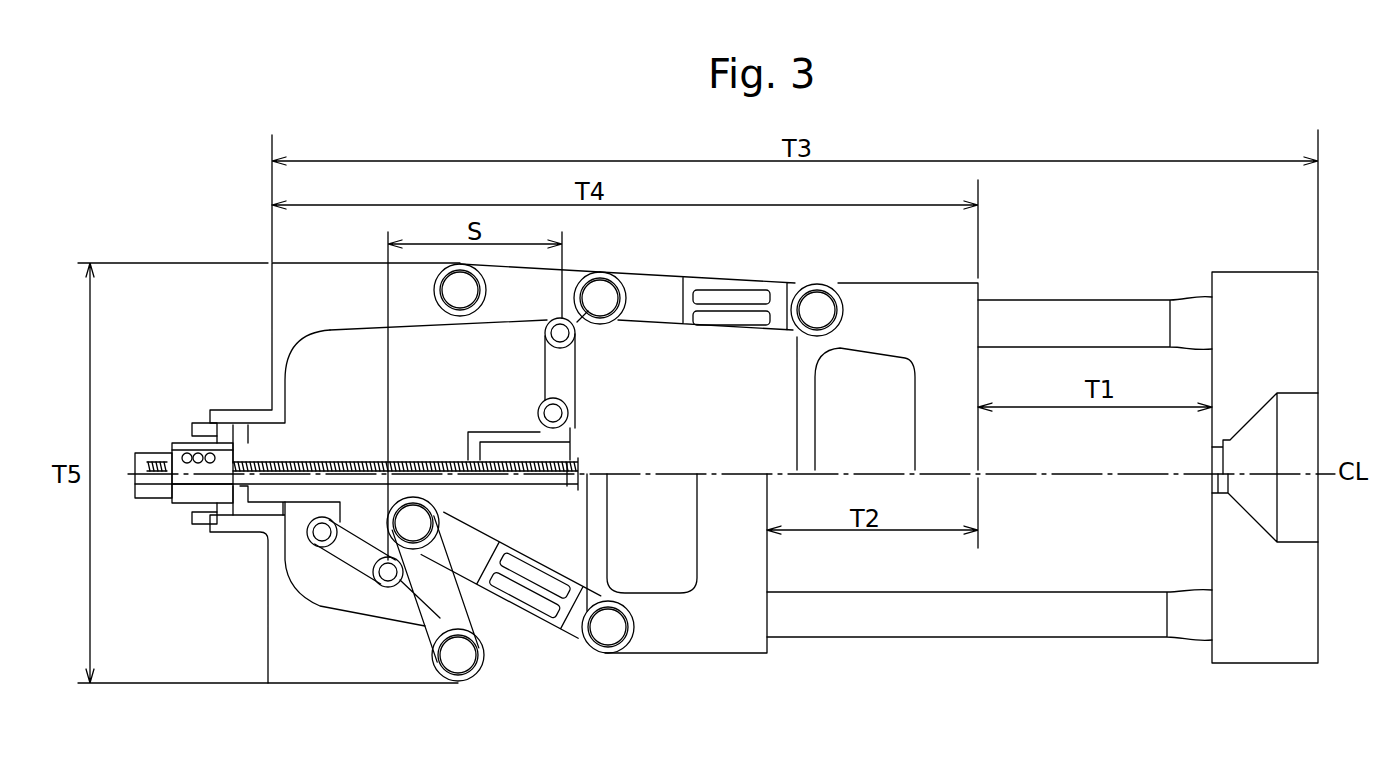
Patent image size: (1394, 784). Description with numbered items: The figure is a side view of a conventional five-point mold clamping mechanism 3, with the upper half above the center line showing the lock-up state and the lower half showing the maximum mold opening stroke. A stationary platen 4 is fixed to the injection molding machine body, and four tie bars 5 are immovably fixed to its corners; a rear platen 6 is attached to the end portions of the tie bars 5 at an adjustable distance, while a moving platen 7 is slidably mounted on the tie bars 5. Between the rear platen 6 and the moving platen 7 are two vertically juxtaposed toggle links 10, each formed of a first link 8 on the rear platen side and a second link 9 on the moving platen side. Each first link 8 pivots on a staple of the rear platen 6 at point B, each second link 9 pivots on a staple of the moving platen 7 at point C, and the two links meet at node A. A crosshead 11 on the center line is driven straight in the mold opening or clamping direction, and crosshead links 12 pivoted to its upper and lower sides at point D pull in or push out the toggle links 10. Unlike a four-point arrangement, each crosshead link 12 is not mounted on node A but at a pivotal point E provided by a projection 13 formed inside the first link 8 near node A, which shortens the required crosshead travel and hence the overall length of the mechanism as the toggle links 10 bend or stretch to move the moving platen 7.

The five-point mold clamping mechanism 3 is at (1297, 511).
The stationary platen 4 is at (1260, 643).
The tie bars 5 is at (1090, 312).
The rear platen 6 is at (302, 653).
The moving platen 7 is at (910, 300).
The first link 8 is at (517, 300).
The second link 9 is at (660, 308).
The toggle link 10 is at (591, 480).
The crosshead 11 is at (557, 453).
The crosshead link 12 is at (553, 377).
The projection 13 is at (496, 528).
The node A is at (602, 290).
The pivotal point B is at (457, 295).
The pivotal point C is at (818, 300).
The pivotal point D is at (560, 413).
The pivotal point E is at (545, 333).